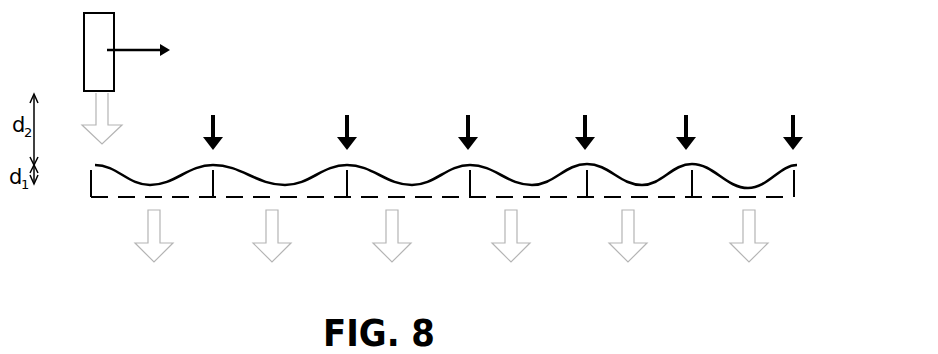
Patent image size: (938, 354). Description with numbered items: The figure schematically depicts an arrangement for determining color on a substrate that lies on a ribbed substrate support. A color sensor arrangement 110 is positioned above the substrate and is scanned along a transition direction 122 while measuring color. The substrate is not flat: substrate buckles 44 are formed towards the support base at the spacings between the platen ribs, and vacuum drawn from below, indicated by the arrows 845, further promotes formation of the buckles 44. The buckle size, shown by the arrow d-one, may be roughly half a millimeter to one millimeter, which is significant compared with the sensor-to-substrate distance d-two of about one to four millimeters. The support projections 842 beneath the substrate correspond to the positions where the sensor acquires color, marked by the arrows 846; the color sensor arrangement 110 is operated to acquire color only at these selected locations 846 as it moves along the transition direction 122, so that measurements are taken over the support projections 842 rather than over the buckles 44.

The substrate buckles 44 is at (150, 183).
The color sensor arrangement 110 is at (90, 21).
The transition direction 122 is at (127, 46).
The forming elements 842 is at (91, 192).
The fluid flow 845 is at (152, 257).
The sample portions (selected locations) 846 is at (503, 119).